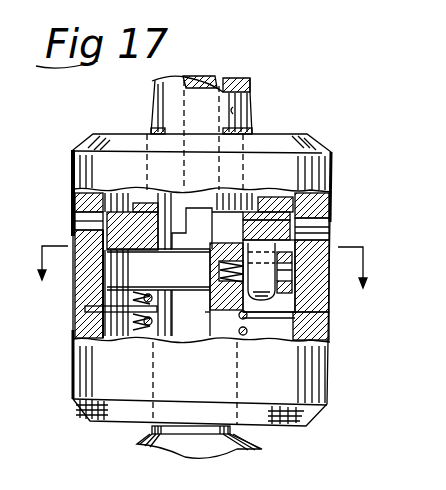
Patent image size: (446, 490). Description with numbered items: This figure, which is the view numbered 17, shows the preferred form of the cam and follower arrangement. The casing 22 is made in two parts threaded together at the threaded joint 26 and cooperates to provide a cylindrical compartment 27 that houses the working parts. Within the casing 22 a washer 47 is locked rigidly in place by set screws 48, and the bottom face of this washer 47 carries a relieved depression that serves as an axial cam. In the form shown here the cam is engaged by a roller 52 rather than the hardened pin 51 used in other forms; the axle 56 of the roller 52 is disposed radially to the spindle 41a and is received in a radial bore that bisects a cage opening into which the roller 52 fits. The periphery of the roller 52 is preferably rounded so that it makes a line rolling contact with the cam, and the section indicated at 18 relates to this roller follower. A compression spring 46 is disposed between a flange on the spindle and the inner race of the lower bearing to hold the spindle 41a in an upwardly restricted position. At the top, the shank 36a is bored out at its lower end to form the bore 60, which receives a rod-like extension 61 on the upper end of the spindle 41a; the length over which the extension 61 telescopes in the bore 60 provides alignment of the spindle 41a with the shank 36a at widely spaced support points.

The Fig. 17 view 17 is at (147, 440).
The section line 18 is at (200, 282).
The casing 22 is at (72, 330).
The threaded joint 26 is at (106, 287).
The cylindrical compartment 27 is at (90, 313).
The shank 36a is at (176, 173).
The spindle 41a is at (209, 313).
The compression spring 46 is at (248, 333).
The washer 47 is at (73, 208).
The set screws 48 is at (73, 226).
The hardened pin 51 is at (210, 308).
The roller 52 is at (247, 335).
The axle 56 is at (283, 269).
The bore 60 is at (253, 113).
The extension 61 is at (226, 83).